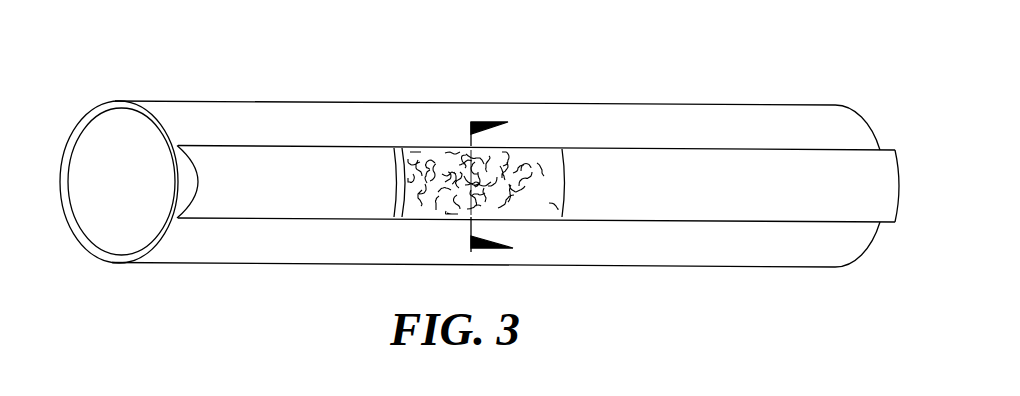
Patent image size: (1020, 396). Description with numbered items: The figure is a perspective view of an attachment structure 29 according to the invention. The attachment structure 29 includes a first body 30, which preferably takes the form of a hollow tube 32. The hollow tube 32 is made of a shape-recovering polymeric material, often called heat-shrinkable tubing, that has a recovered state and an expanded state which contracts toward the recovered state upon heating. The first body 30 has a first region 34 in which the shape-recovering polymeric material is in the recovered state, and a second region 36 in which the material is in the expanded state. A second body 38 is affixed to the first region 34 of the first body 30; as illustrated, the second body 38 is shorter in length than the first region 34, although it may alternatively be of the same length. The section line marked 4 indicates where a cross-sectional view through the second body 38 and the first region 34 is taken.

The attachment structure 29 is at (479, 179).
The first body 30 is at (470, 171).
The hollow tube 32 is at (85, 250).
The first region 34 is at (378, 185).
The second region 36 is at (538, 190).
The second body 38 is at (550, 182).
The section line 4- 4 is at (502, 188).